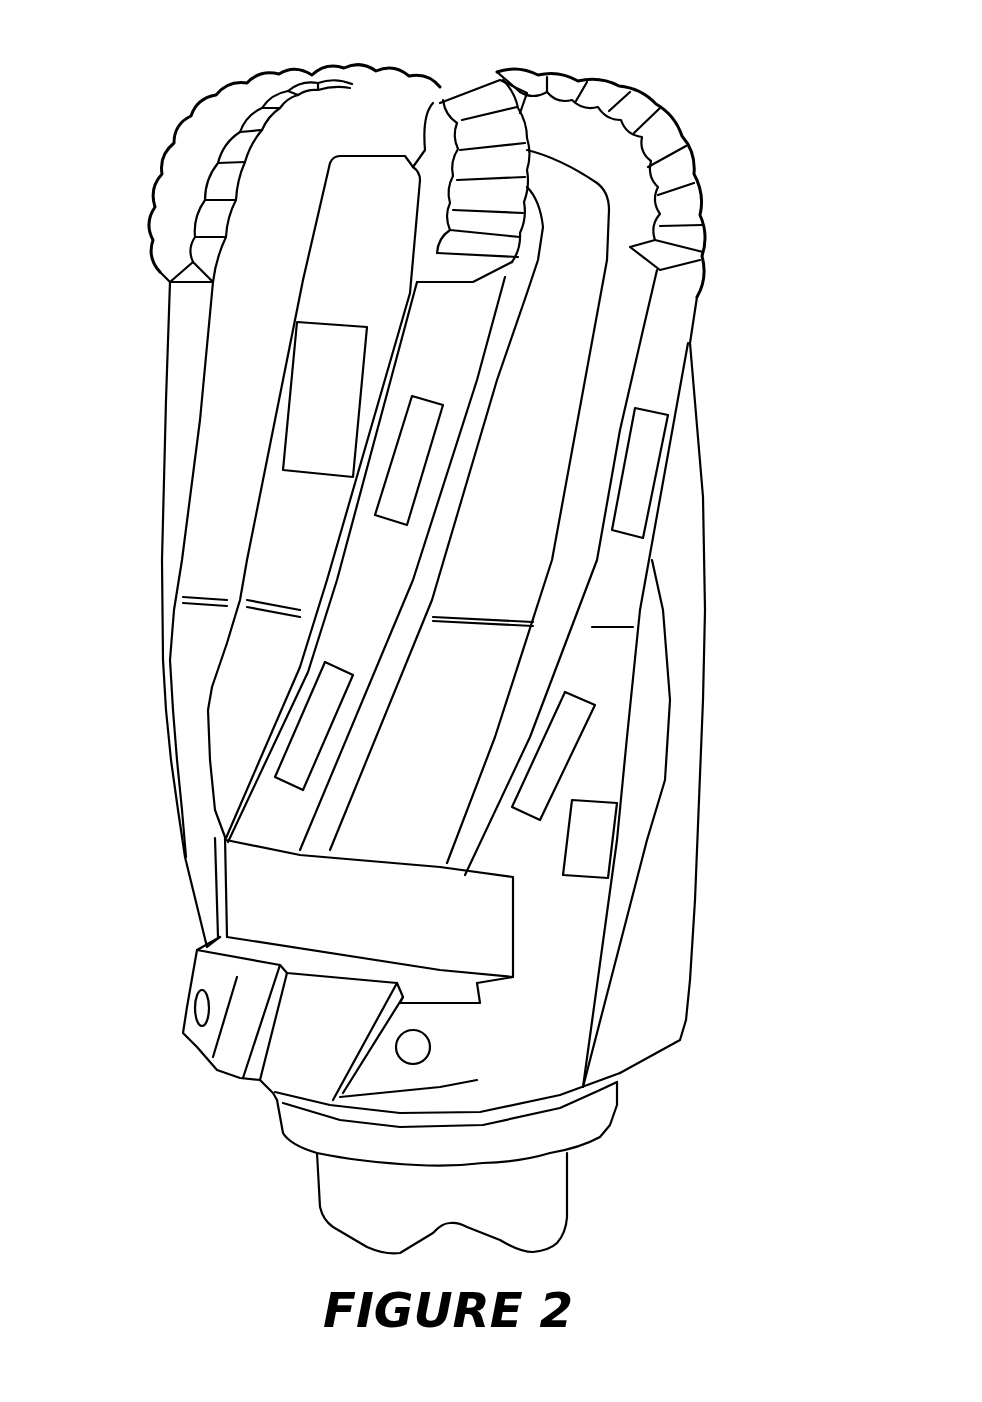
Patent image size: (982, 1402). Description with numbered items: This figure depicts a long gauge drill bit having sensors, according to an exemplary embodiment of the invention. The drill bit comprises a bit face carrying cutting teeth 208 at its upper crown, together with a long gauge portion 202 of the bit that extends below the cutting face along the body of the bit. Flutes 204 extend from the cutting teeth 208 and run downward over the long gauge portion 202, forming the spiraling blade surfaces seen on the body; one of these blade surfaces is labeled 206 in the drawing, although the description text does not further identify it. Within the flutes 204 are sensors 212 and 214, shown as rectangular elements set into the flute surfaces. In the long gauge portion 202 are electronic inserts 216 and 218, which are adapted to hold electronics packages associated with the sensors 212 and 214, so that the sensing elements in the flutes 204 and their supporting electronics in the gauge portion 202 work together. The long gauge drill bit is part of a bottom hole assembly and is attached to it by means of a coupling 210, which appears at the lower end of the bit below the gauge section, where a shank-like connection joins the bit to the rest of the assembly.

The long gauge portion 202 is at (702, 615).
The flutes 204 is at (590, 638).
The blade face 206 is at (385, 730).
The cutting teeth 208 is at (353, 78).
The coupling 210 is at (537, 1210).
The sensor 212 is at (410, 427).
The sensor 214 is at (540, 773).
The electronic insert 216 is at (340, 340).
The electronic insert 218 is at (617, 842).